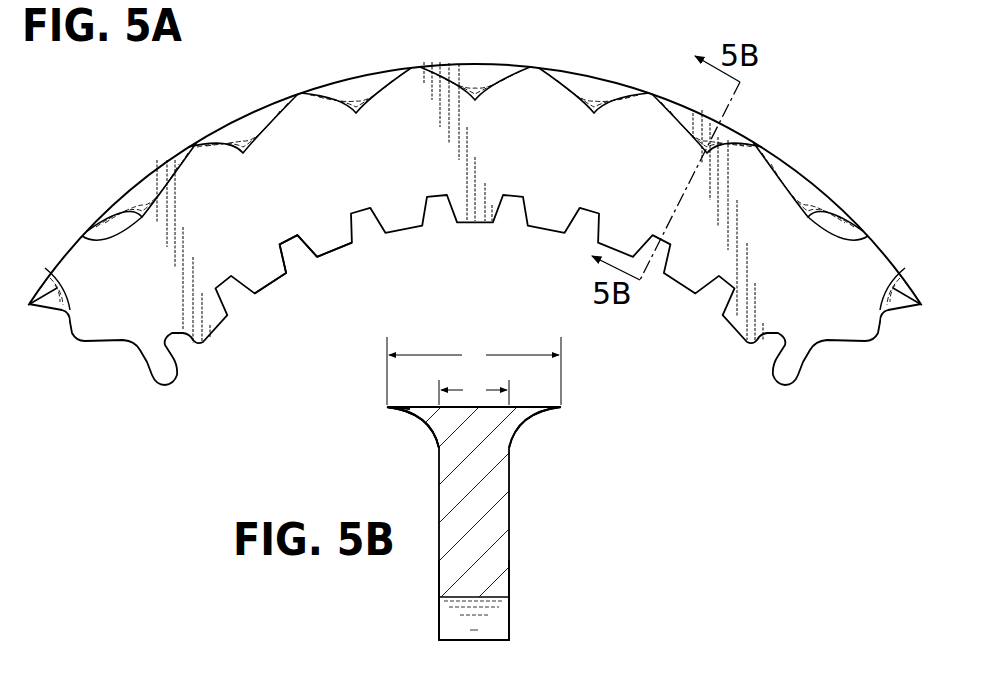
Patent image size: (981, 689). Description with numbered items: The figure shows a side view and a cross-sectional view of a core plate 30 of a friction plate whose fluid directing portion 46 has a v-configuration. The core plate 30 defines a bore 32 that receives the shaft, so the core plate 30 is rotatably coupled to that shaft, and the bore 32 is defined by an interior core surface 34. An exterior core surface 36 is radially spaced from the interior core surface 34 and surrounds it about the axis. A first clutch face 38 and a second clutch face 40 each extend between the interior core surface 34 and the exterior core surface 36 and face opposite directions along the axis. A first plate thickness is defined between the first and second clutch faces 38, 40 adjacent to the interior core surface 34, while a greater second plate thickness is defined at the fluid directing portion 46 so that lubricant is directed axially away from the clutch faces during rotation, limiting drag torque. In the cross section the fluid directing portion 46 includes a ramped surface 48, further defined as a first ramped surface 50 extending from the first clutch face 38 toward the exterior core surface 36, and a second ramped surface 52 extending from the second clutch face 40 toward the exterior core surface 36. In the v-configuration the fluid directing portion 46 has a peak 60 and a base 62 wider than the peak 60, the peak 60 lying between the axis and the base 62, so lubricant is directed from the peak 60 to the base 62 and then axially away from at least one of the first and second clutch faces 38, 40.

In FIG. 5A, the core plate 30 is at (852, 133).
In FIG. 5B, the core plate 30 is at (606, 496).
In FIG. 5A, the bore 32 is at (267, 296).
In FIG. 5A, the interior core surface 34 is at (337, 259).
In FIG. 5A, the exterior core surface 36 is at (248, 112).
In FIG. 5B, the first clutch face 38 is at (438, 584).
In FIG. 5B, the second clutch face 40 is at (510, 578).
In FIG. 5A, the fluid directing portion 46 is at (219, 155).
In FIG. 5B, the fluid directing portion 46 is at (409, 449).
In FIG. 5B, the ramped surface 48 is at (404, 412).
In FIG. 5B, the first ramped surface 50 is at (413, 427).
In FIG. 5B, the second ramped surface 52 is at (527, 426).
In FIG. 5A, the peak 60 is at (96, 234).
In FIG. 5A, the base 62 is at (230, 128).